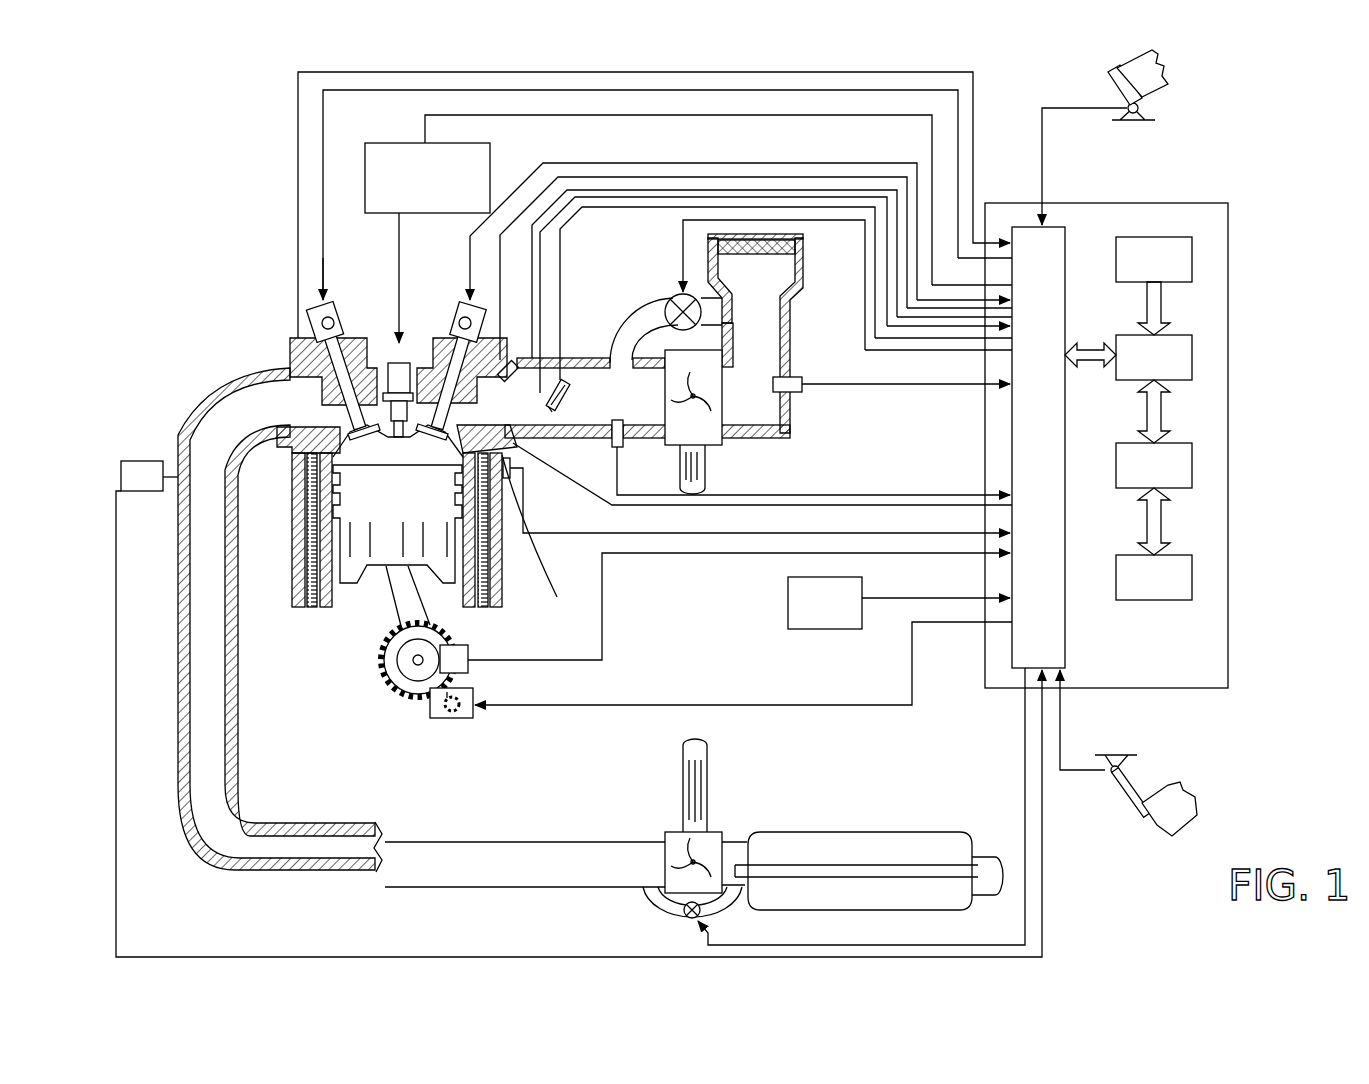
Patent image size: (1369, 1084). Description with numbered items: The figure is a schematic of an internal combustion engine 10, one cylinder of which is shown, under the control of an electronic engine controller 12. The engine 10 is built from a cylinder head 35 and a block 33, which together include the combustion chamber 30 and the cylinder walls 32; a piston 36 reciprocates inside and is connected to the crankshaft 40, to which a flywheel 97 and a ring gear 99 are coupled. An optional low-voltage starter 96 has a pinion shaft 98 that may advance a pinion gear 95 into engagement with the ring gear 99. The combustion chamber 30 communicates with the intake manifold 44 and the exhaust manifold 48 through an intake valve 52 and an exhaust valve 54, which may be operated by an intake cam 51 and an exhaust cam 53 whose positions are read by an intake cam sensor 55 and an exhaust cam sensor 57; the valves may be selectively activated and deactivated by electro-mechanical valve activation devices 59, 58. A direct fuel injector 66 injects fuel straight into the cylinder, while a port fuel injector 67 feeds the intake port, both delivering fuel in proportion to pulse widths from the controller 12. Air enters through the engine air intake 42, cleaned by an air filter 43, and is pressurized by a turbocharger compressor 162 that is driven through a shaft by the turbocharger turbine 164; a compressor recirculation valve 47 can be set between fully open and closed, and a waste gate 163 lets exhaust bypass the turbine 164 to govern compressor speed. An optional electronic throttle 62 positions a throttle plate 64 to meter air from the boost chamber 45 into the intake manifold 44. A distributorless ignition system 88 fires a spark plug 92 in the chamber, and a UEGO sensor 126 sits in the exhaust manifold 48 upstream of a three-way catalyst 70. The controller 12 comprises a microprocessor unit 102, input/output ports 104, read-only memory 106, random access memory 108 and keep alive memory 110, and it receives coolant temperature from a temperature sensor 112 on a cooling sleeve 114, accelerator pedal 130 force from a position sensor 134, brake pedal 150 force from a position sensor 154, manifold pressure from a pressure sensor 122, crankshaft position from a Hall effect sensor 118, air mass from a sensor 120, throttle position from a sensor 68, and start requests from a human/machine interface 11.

The internal combustion engine 10 is at (220, 288).
The human/machine interface 11 is at (899, 603).
The electronic engine controller 12 is at (1228, 208).
The combustion chamber 30 is at (300, 558).
The cylinder walls 32 is at (337, 596).
The block 33 is at (290, 487).
The cylinder head 35 is at (290, 340).
The piston 36 is at (378, 552).
The crankshaft 40 is at (412, 668).
The engine air intake 42 is at (628, 272).
The air filter 43 is at (775, 262).
The intake manifold 44 is at (538, 410).
The boost chamber 45 is at (645, 410).
The compressor recirculation valve 47 is at (672, 298).
The exhaust manifold 48 is at (272, 418).
The intake cam 51 is at (452, 305).
The intake valve 52 is at (442, 402).
The exhaust cam 53 is at (340, 300).
The exhaust valve 54 is at (315, 402).
The intake cam sensor 55 is at (483, 330).
The exhaust cam sensor 57 is at (312, 330).
The valve activation device 58 is at (336, 324).
The valve activation device 59 is at (458, 330).
The electronic throttle 62 is at (566, 398).
The throttle plate 64 is at (556, 408).
The direct fuel injector 66 is at (510, 474).
The port fuel injector 67 is at (508, 360).
The throttle position sensor 68 is at (555, 380).
The three-way catalyst 70 is at (790, 835).
The distributorless ignition system 88 is at (490, 158).
The spark plug 92 is at (402, 355).
The pinion gear 95 is at (453, 714).
The starter 96 is at (466, 718).
The flywheel 97 is at (392, 656).
The pinion shaft 98 is at (445, 720).
The ring gear 99 is at (410, 695).
The microprocessor unit 102 is at (1192, 357).
The input/output ports 104 is at (1065, 237).
The read-only memory 106 is at (1192, 258).
The random access memory 108 is at (1192, 466).
The keep alive memory 110 is at (1192, 577).
The temperature sensor 112 is at (526, 505).
The cooling sleeve 114 is at (548, 541).
The Hall effect sensor 118 is at (470, 650).
The air mass sensor 120 is at (800, 382).
The pressure sensor 122 is at (612, 447).
The Universal Exhaust Gas Oxygen sensor 126 is at (121, 470).
The accelerator pedal 130 is at (1110, 82).
The position sensor 134 is at (1140, 108).
The brake pedal 150 is at (1140, 818).
The position sensor 154 is at (1104, 762).
The turbocharger compressor 162 is at (708, 452).
The waste gate 163 is at (688, 916).
The turbocharger turbine 164 is at (667, 832).